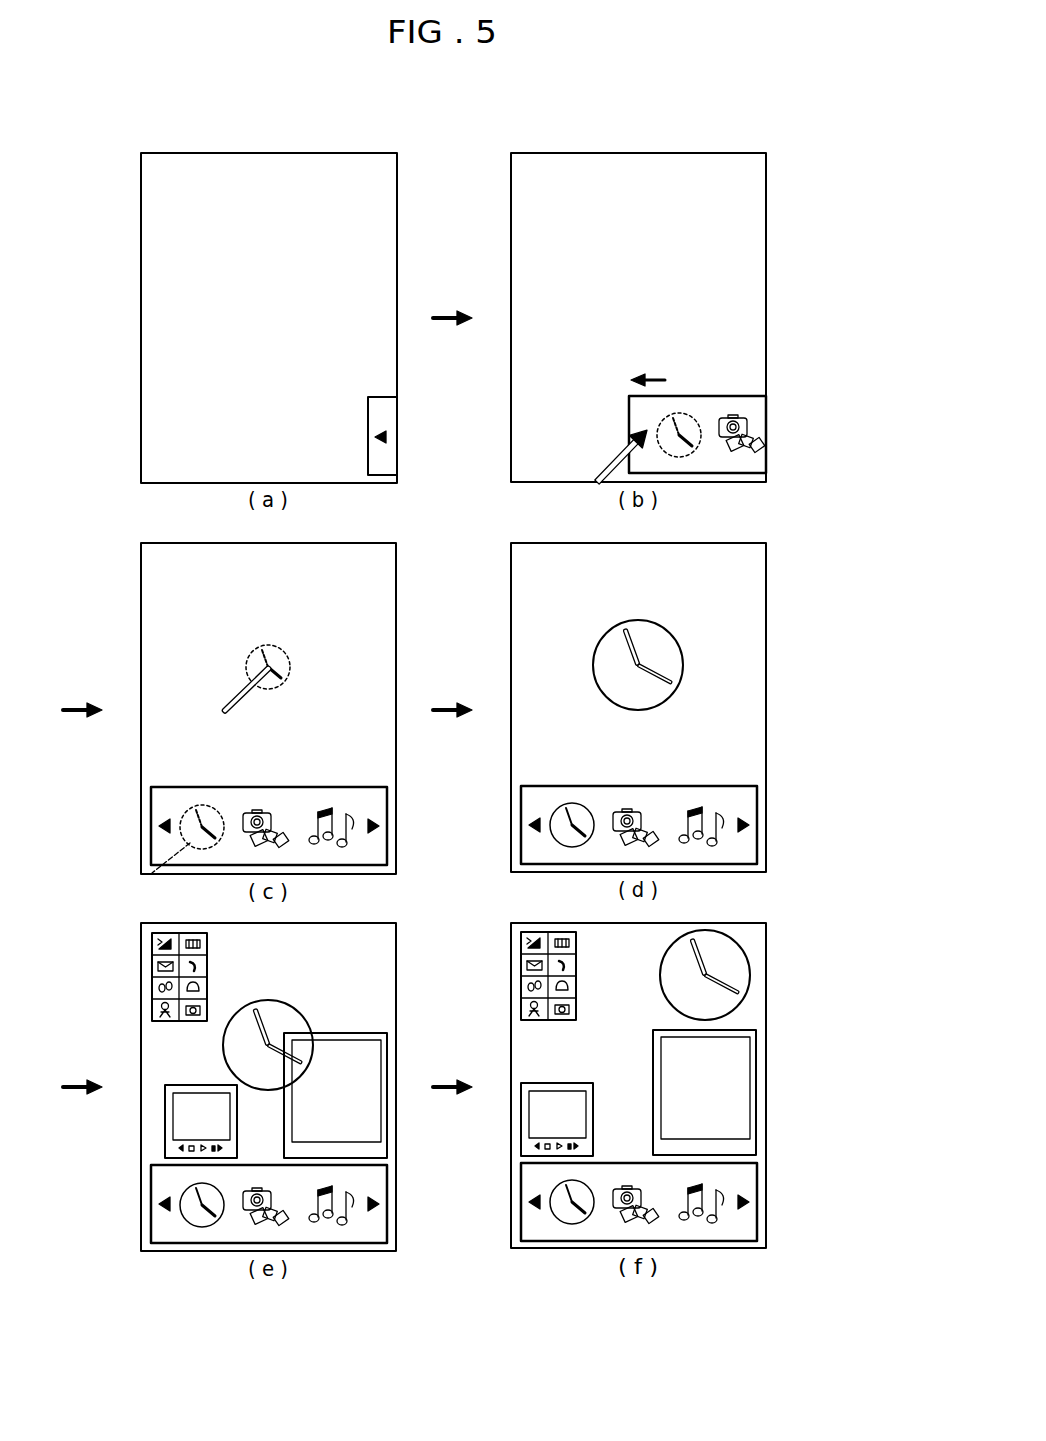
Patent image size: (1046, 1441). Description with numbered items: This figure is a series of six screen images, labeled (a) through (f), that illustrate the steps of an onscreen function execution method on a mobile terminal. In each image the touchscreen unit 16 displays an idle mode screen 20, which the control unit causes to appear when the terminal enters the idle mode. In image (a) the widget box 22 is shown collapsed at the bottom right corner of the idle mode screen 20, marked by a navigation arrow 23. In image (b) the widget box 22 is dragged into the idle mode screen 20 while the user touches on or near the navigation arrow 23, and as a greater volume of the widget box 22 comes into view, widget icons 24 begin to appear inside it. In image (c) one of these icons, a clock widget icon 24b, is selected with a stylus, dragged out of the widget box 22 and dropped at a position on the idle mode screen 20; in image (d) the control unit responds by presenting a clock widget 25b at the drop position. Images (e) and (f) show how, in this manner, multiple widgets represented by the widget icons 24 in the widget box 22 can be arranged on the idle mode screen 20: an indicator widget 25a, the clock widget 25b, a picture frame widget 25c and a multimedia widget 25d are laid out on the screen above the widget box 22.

The touchscreen unit 16 is at (131, 113).
The idle mode screen 20 is at (130, 194).
The widget box 22 is at (397, 476).
The navigation arrow 23 is at (392, 436).
The widget icons 24 is at (686, 457).
The clock widget icon 24b is at (247, 665).
The indicator widget 25a is at (150, 950).
The clock widget 25b is at (684, 663).
The picture frame widget 25c is at (388, 1073).
The multimedia widget 25d is at (163, 1115).